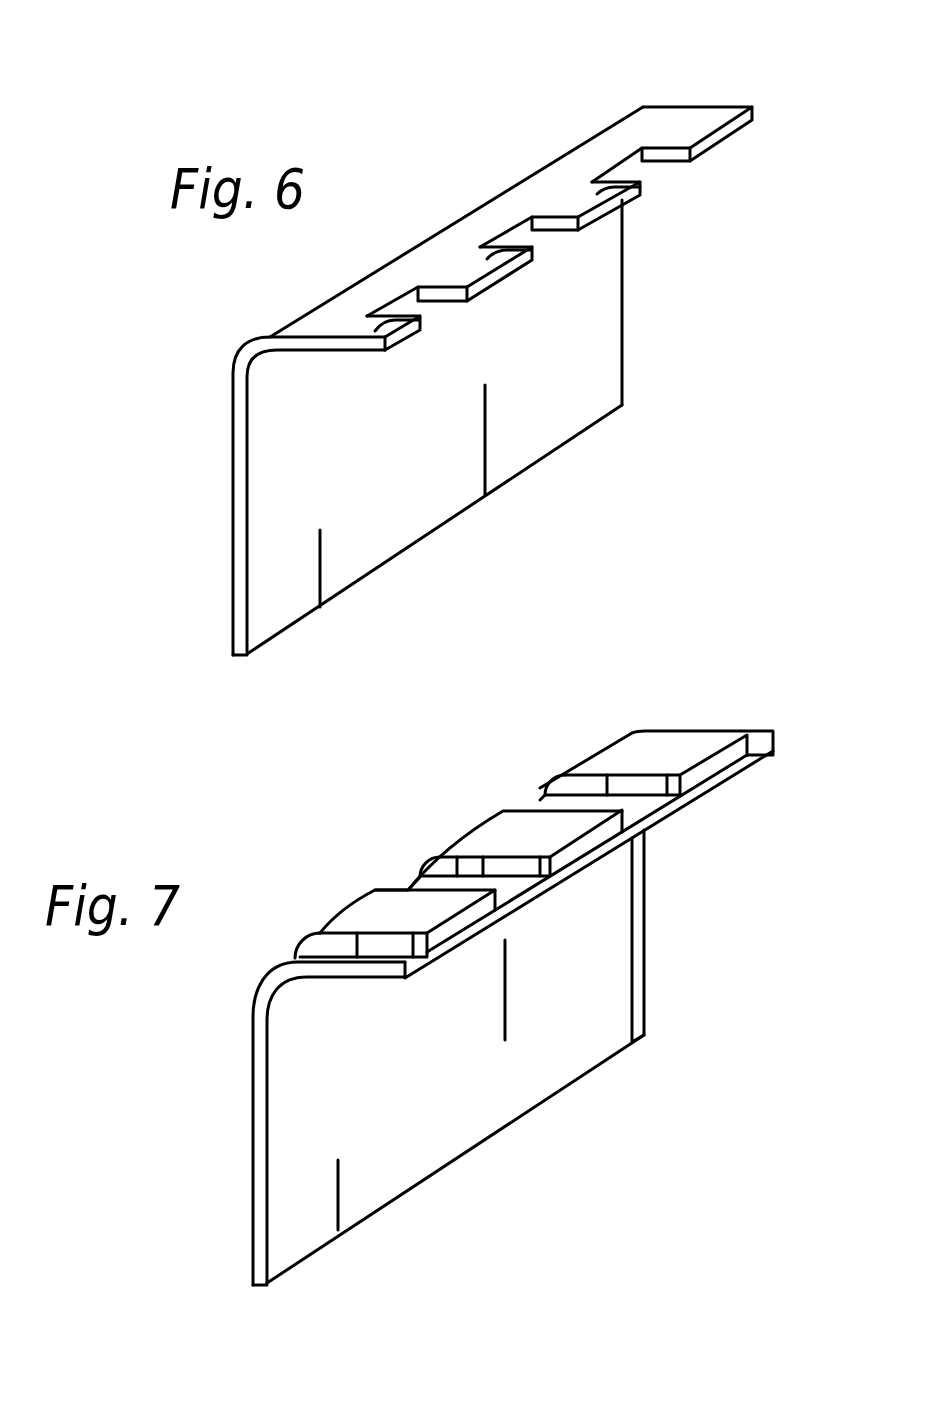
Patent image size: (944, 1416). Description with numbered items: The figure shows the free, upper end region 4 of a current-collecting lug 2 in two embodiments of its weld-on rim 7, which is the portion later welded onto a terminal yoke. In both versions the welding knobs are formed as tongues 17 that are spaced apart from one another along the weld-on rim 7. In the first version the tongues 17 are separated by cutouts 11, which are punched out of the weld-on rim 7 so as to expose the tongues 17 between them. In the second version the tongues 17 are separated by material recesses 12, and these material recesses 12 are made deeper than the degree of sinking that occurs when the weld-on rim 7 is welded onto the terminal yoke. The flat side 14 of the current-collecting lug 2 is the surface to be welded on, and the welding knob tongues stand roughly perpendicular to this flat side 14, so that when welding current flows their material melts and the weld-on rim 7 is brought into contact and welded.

In FIG. 6, the current-collecting lug 2 is at (235, 664).
In FIG. 7, the current-collecting lug 2 is at (255, 1291).
In FIG. 6, the free upper end region 4 is at (183, 400).
In FIG. 7, the free upper end region 4 is at (203, 1042).
In FIG. 6, the weld-on rim 7 is at (643, 98).
In FIG. 7, the weld-on rim 7 is at (677, 728).
In FIG. 6, the cutouts 11 is at (427, 308).
In FIG. 7, the material recesses 12 is at (457, 883).
In FIG. 6, the flat side 14 is at (424, 250).
In FIG. 7, the flat side 14 is at (540, 828).
In FIG. 6, the tongues 17 is at (420, 333).